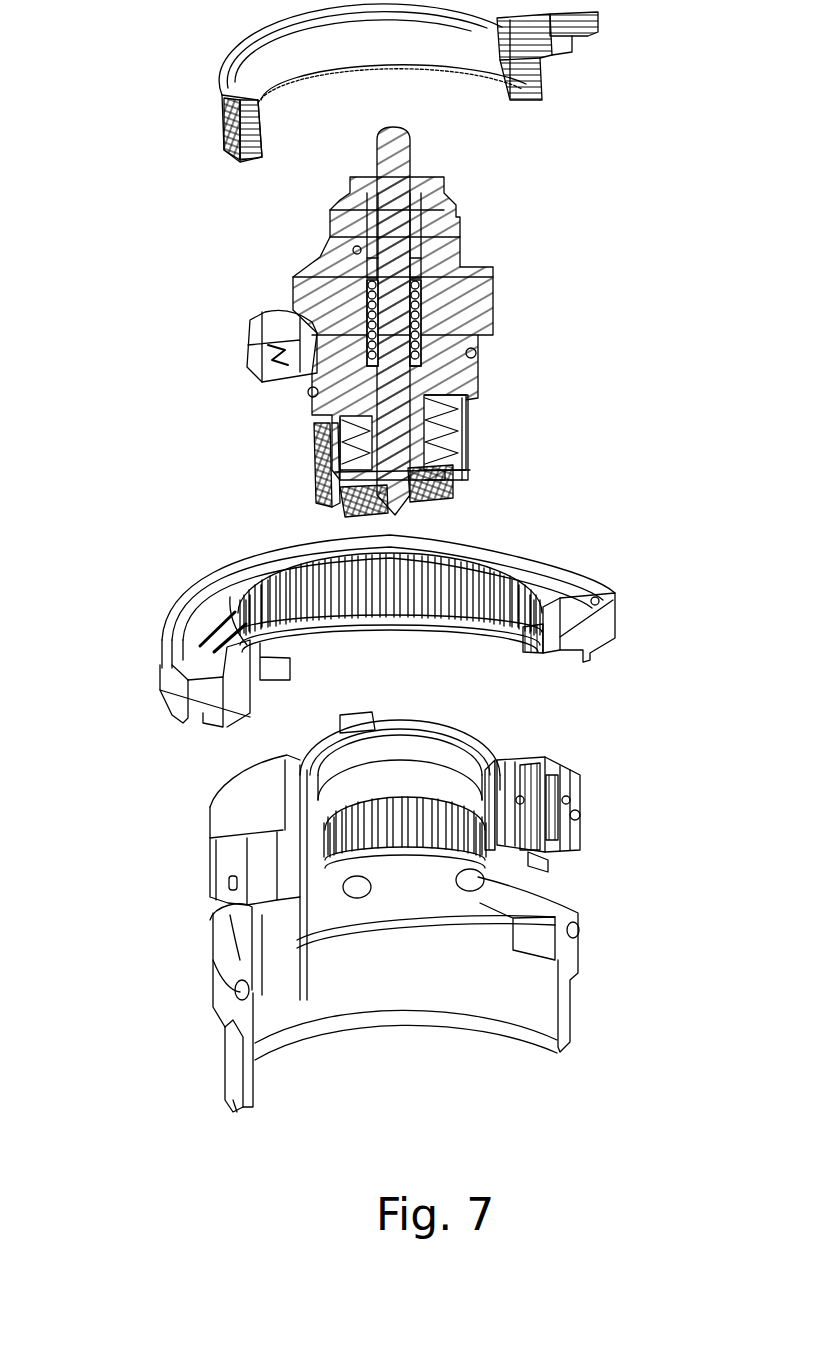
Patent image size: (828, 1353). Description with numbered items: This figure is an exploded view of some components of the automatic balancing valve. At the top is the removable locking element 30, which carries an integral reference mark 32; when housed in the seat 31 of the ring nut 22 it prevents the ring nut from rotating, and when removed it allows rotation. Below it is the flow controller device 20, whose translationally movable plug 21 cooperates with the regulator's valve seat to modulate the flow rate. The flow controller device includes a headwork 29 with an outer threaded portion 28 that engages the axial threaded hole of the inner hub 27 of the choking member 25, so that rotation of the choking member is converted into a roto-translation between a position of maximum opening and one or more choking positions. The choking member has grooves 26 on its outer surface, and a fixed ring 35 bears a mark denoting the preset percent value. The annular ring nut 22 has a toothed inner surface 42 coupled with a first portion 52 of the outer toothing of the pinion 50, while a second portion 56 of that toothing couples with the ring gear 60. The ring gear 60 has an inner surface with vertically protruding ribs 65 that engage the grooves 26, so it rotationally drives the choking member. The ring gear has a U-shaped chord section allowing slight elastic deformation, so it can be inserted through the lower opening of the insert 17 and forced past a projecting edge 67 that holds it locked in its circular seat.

The insert 17 is at (253, 990).
The flow controller device 20 is at (366, 332).
The plug 21 is at (447, 492).
The ring nut 22 is at (342, 635).
The choking member 25 is at (366, 459).
The grooves 26 is at (312, 450).
The inner hub 27 is at (462, 408).
The outer threaded portion 28 is at (432, 425).
The headwork 29 is at (494, 296).
The locking element 30 is at (362, 83).
The seat 31 is at (477, 568).
The reference mark 32 is at (577, 34).
The ring 35 is at (262, 338).
The toothed inner surface 42 is at (550, 632).
The pinion 50 is at (583, 815).
The first portion of the outer toothing 52 is at (557, 767).
The second portion of the outer toothing 56 is at (558, 827).
The ring gear 60 is at (380, 912).
The vertically protruding ribs 65 is at (433, 843).
The projecting edge 67 is at (493, 850).